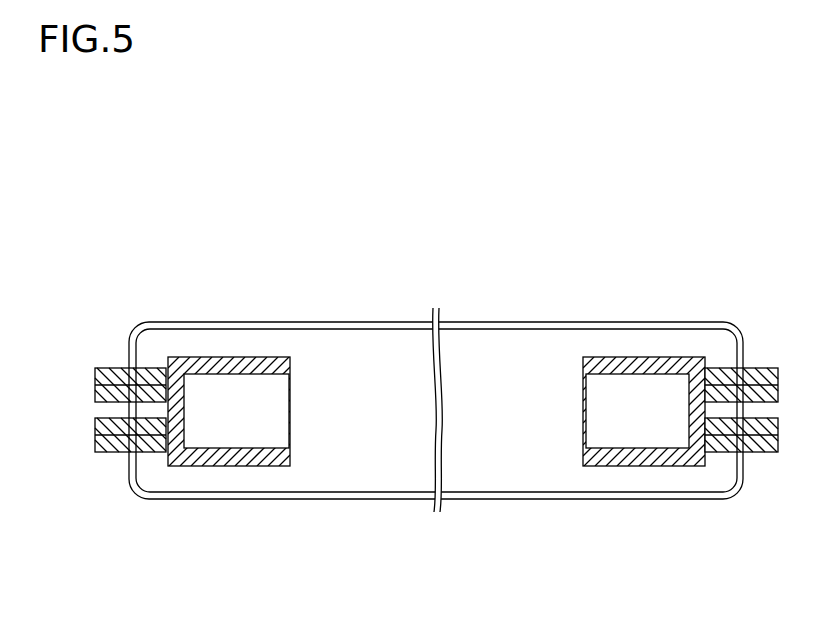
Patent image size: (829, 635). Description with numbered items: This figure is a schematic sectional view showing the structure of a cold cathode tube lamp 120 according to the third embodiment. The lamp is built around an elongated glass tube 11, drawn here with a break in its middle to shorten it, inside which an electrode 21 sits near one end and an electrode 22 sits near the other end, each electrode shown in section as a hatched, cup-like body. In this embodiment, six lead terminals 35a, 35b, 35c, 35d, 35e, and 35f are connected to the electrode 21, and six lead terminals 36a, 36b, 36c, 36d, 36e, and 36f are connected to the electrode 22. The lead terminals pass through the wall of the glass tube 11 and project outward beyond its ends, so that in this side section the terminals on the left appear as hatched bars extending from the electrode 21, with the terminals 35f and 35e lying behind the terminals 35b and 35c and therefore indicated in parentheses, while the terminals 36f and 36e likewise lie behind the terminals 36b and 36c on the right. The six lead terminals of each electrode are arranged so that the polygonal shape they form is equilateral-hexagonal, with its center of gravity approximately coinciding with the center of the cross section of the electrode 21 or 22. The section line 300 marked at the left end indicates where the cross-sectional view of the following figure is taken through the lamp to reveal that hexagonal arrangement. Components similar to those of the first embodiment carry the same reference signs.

The cold cathode tube lamp 120 is at (723, 147).
The glass tube 11 is at (341, 322).
The electrode 21 is at (257, 357).
The electrode 22 is at (632, 357).
The lead terminal 35a is at (155, 368).
The lead terminal 35b is at (108, 370).
The lead terminal 35c is at (100, 450).
The lead terminal 35d is at (147, 452).
The lead terminal 35e is at (130, 435).
The lead terminal 35f is at (130, 385).
The lead terminal 36a is at (723, 372).
The lead terminal 36b is at (765, 380).
The lead terminal 36c is at (757, 453).
The lead terminal 36d is at (718, 450).
The lead terminal 36e is at (741, 435).
The lead terminal 36f is at (741, 385).
The section line 300 is at (160, 283).